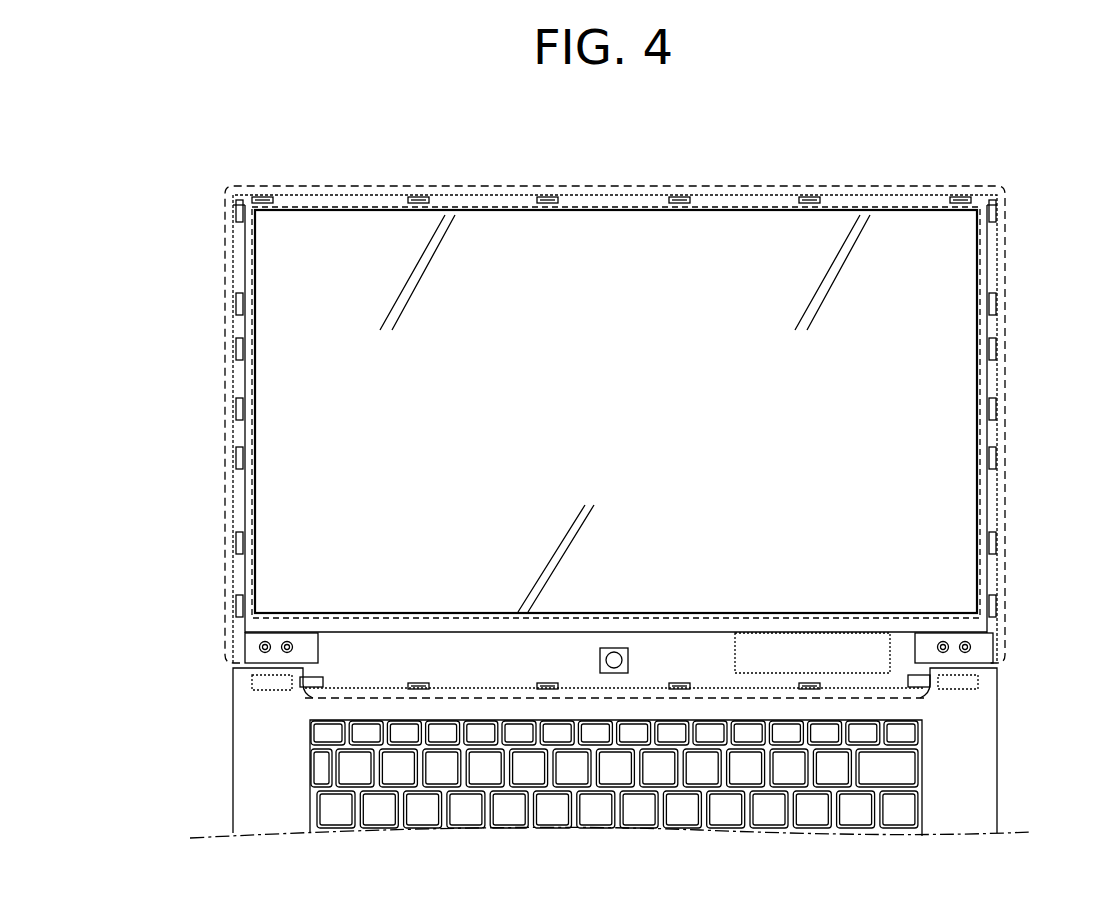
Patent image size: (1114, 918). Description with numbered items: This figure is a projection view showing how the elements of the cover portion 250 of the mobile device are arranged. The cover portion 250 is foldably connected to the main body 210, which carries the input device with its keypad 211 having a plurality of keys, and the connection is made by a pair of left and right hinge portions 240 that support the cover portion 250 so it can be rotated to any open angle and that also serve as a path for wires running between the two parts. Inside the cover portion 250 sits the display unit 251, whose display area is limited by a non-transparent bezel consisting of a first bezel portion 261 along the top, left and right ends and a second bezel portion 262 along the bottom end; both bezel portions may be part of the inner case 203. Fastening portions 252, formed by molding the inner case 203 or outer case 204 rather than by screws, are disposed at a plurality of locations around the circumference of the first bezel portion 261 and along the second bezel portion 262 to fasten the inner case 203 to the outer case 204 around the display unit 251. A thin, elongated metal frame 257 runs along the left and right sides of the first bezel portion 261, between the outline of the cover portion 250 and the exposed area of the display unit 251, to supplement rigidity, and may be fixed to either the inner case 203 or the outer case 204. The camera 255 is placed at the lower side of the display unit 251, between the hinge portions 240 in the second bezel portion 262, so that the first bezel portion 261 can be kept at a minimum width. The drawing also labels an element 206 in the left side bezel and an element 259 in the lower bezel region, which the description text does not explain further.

The inner case 203 is at (615, 383).
The outer case 204 is at (843, 188).
The coupling member 206 is at (237, 347).
The main body 210 is at (1003, 776).
The keypad 211 is at (905, 815).
The hinge portion 240 is at (300, 690).
The cover portion 250 is at (1003, 478).
The display unit 251 is at (735, 265).
The fastening portion 252 is at (547, 195).
The camera 255 is at (613, 668).
The metal frame 257 is at (237, 542).
The circuit board 259 is at (875, 665).
The first bezel portion 261 is at (1010, 553).
The second bezel portion 262 is at (1010, 635).